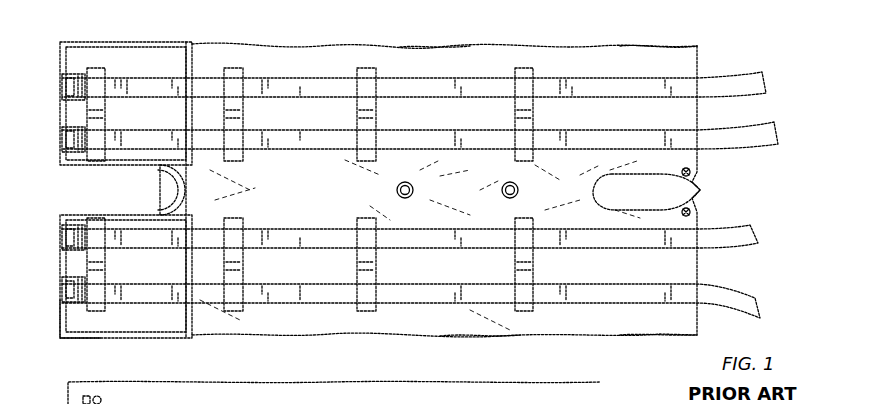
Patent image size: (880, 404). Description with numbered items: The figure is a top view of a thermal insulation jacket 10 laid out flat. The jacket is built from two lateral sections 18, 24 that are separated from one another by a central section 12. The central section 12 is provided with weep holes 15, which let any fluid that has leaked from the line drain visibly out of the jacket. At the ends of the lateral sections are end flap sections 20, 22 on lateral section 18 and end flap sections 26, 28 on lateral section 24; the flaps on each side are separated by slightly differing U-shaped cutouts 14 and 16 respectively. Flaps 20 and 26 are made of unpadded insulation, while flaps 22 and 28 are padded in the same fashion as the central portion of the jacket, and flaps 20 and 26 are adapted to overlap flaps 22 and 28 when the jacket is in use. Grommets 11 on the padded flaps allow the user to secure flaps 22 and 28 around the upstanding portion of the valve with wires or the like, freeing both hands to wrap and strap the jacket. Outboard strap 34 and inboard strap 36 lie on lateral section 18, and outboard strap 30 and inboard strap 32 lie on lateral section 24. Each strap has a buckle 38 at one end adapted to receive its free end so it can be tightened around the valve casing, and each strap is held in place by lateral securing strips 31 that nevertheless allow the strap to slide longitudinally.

The thermal insulation jacket 10 is at (700, 46).
The grommets 11 is at (702, 182).
The central section 12 is at (467, 189).
The U-shaped cutout 14 is at (160, 201).
The weep holes 15 is at (408, 198).
The U-shaped cutout 16 is at (628, 201).
The lateral section 18 is at (435, 50).
The end flap section 20 is at (80, 58).
The end flap section 22 is at (657, 52).
The lateral section 24 is at (490, 333).
The end flap section 26 is at (80, 325).
The end flap section 28 is at (661, 330).
The outboard strap 30 is at (408, 293).
The lateral securing strips 31 is at (525, 86).
The inboard strap 32 is at (338, 237).
The outboard strap 34 is at (447, 86).
The inboard strap 36 is at (306, 142).
The buckle 38 is at (52, 140).